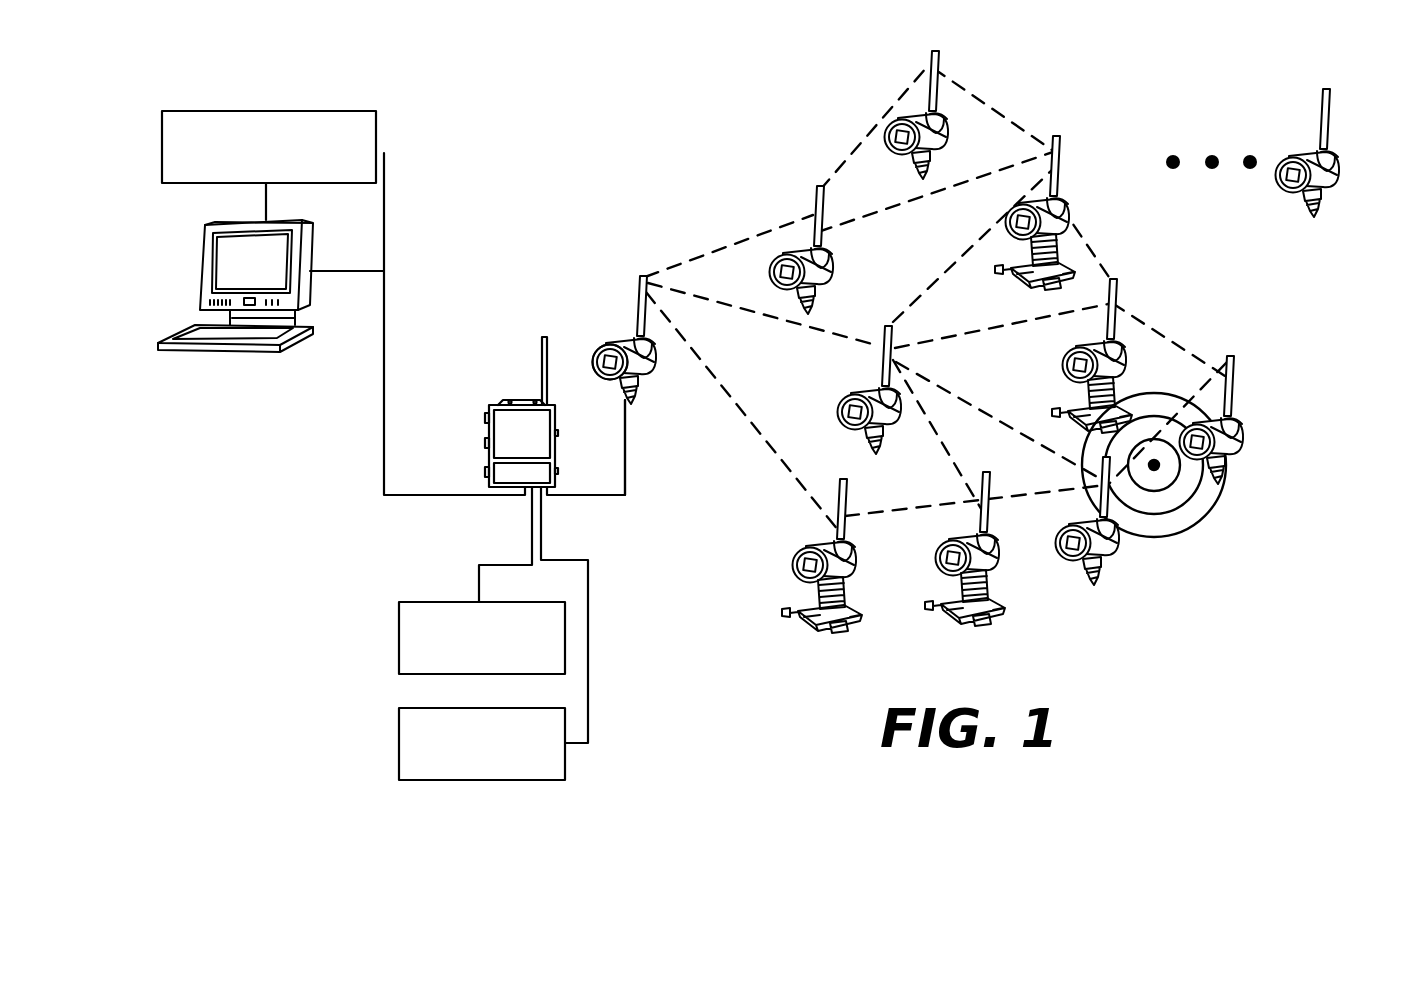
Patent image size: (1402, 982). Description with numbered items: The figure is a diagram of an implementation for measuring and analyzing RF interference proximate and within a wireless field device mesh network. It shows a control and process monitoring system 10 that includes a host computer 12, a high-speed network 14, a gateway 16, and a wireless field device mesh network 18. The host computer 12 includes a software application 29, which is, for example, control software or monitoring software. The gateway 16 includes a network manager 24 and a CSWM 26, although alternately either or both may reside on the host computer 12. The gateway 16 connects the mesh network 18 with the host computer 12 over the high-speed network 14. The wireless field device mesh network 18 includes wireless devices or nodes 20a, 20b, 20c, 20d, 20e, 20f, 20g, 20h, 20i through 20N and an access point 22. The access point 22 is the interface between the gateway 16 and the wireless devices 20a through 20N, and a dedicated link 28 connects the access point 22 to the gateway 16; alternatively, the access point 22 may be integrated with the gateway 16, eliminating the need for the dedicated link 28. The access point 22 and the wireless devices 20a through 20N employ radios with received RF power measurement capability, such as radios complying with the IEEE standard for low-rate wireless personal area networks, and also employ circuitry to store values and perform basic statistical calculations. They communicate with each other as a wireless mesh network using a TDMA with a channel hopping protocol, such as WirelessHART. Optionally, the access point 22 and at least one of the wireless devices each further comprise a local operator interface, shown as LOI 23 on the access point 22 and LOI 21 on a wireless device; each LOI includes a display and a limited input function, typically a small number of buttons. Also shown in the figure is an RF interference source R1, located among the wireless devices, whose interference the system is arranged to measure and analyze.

The control and process monitoring system 10 is at (665, 116).
The host computer 12 is at (200, 260).
The high-speed network 14 is at (384, 200).
The gateway 16 is at (489, 436).
The wireless field device mesh network 18 is at (755, 577).
The wireless device 20a is at (818, 262).
The wireless device 20b is at (893, 412).
The wireless device 20c is at (840, 565).
The wireless device 20d is at (932, 138).
The wireless device 20e is at (985, 555).
The wireless device 20f is at (1062, 214).
The wireless device 20g is at (1105, 360).
The wireless device 20h is at (1106, 540).
The wireless device 20i is at (1228, 438).
The wireless device 20N is at (1327, 172).
The local operator interface 21 is at (1066, 558).
The access point 22 is at (640, 365).
The local operator interface 23 is at (598, 355).
The network manager 24 is at (399, 643).
The CSWM 26 is at (399, 752).
The dedicated link 28 is at (625, 440).
The software application 29 is at (265, 111).
The RF interference source R1 is at (1154, 465).